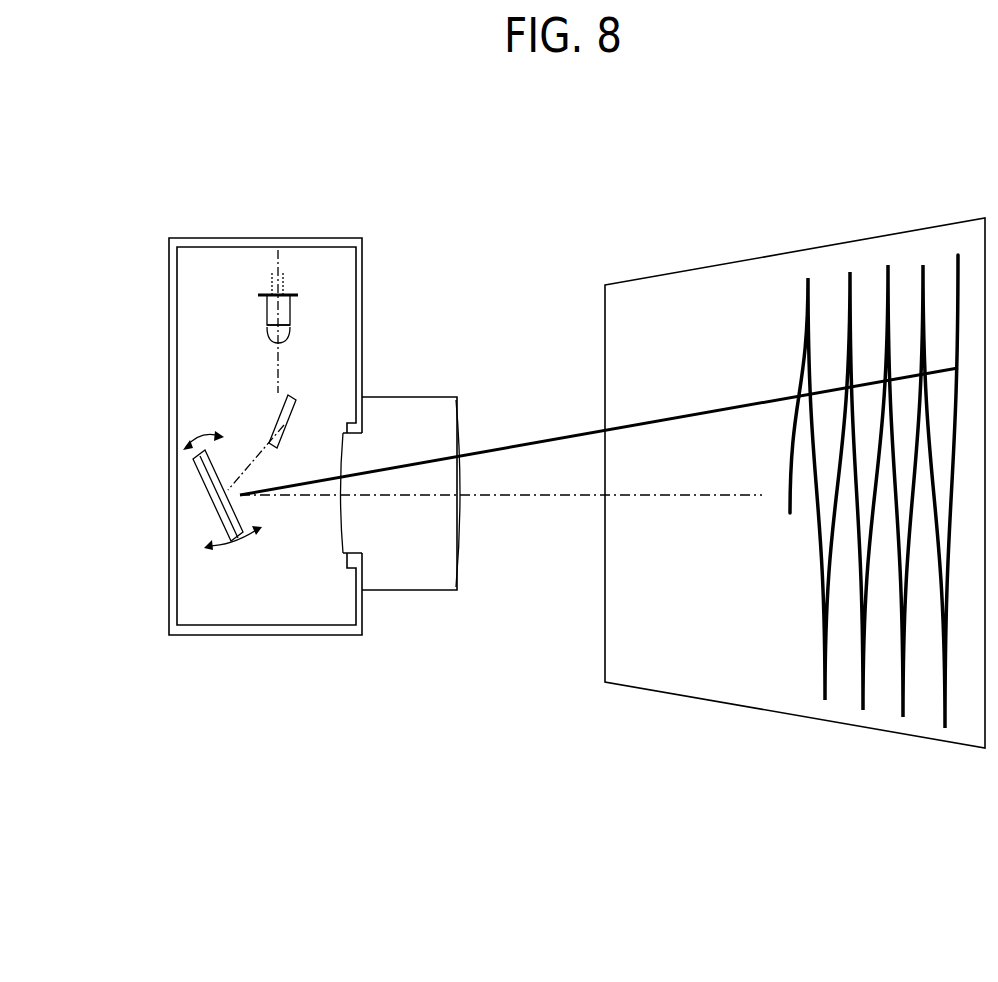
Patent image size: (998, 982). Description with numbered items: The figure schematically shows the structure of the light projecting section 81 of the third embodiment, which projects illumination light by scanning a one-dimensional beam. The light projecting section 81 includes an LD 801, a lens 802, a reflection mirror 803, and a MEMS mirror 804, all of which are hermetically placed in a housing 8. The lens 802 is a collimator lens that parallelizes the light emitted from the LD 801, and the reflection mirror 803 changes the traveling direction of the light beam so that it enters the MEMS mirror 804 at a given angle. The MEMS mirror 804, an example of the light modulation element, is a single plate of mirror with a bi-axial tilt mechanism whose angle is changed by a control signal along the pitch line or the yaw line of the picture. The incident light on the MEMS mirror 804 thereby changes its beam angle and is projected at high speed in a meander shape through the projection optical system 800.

The housing 8 is at (265, 439).
The light projecting section 81 is at (290, 238).
The projection optical system 800 is at (423, 397).
The LD 801 is at (292, 307).
The lens 802 is at (292, 333).
The reflection mirror 803 is at (287, 407).
The MEMS mirror 804 is at (228, 493).